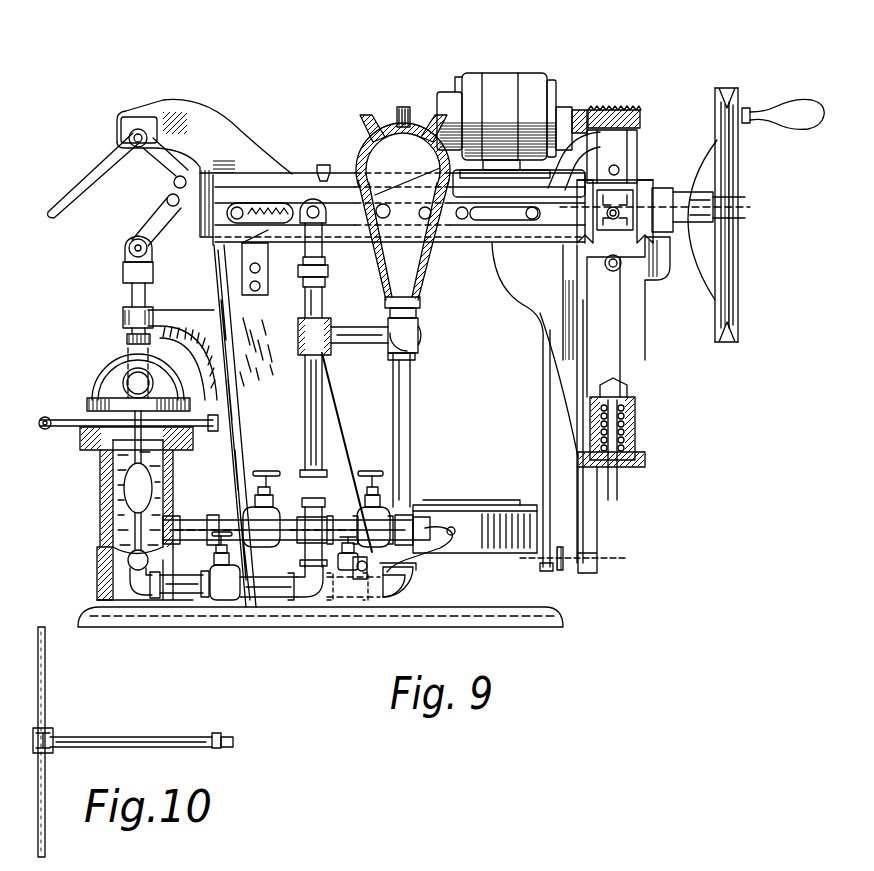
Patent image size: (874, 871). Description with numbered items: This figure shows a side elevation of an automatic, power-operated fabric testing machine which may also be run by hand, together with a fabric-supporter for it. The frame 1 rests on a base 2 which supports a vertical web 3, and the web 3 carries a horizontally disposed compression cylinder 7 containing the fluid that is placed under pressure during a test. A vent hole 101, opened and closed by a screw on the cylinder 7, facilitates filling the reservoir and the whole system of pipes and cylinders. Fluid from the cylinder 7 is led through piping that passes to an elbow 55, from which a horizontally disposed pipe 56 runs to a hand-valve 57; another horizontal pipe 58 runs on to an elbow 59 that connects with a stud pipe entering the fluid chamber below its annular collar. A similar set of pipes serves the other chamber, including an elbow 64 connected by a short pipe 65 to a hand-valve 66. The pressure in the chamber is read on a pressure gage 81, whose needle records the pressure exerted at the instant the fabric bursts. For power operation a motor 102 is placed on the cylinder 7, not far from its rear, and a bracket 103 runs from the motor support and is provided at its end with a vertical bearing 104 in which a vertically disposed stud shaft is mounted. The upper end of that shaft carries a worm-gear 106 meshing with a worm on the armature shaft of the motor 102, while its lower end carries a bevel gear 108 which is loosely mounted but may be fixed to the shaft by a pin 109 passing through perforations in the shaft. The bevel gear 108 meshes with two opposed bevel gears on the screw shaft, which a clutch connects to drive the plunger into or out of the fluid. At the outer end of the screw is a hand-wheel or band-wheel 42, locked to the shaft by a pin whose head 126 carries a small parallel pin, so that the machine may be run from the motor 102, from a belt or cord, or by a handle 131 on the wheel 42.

The frame 1 is at (261, 340).
The base 2 is at (478, 622).
The vertical web 3 is at (343, 451).
The compression cylinder 7 is at (300, 176).
The hand-wheel 42 is at (720, 87).
The elbow 55 is at (310, 600).
The horizontally disposed pipe 56 is at (270, 598).
The hand-valve 57 is at (228, 580).
The horizontal pipe 58 is at (189, 574).
The elbow 59 is at (145, 592).
The elbow 64 is at (410, 595).
The short pipe 65 is at (377, 598).
The hand-valve 66 is at (344, 600).
The pressure gage 81 is at (470, 502).
The vent hole 101 is at (320, 164).
The motor 102 is at (499, 70).
The bracket 103 is at (579, 108).
The vertical bearing 104 is at (638, 153).
The worm-gear 106 is at (644, 118).
The bevel gear 108 is at (636, 182).
The pin 109 is at (620, 164).
The head 126 is at (724, 246).
The handle 131 is at (792, 100).